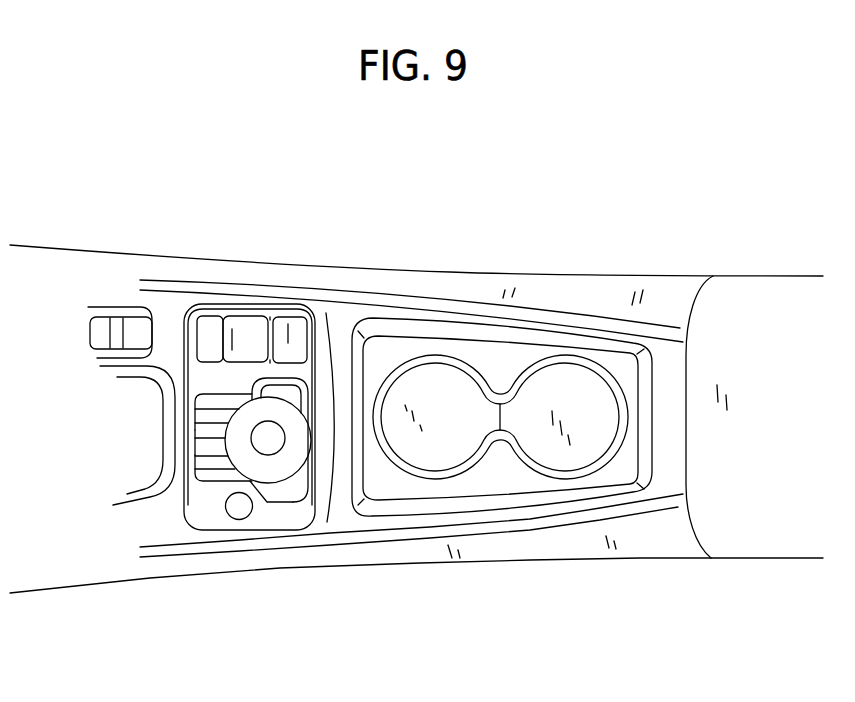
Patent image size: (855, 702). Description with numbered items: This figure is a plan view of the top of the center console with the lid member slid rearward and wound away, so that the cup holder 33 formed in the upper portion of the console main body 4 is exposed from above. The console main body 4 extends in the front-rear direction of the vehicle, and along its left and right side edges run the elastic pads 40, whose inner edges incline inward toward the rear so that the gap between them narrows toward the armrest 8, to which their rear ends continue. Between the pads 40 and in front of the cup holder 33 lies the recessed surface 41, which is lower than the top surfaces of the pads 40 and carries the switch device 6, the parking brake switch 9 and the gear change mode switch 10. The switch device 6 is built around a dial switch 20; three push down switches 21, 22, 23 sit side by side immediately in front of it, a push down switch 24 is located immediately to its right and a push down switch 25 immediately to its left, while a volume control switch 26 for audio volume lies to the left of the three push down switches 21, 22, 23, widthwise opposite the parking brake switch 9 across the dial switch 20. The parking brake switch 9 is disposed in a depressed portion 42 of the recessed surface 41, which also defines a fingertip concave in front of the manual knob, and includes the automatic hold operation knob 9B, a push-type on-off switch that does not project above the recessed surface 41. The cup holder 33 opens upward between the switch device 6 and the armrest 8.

The console main body 4 is at (423, 577).
The switch device 6 is at (211, 498).
The armrest 8 is at (760, 300).
The parking brake switch 9 is at (245, 327).
The automatic hold operation knob 9B is at (287, 333).
The gear change mode switch 10 is at (117, 327).
The dial switch 20 is at (270, 443).
The push down switch 21 is at (213, 411).
The push down switch 22 is at (205, 440).
The push down switch 23 is at (208, 466).
The push down switch 24 is at (289, 390).
The push down switch 25 is at (297, 492).
The volume control switch 26 is at (238, 508).
The cup holder 33 is at (455, 392).
The pad 40 is at (622, 287).
The recessed surface 41 is at (83, 558).
The depressed portion 42 is at (212, 327).